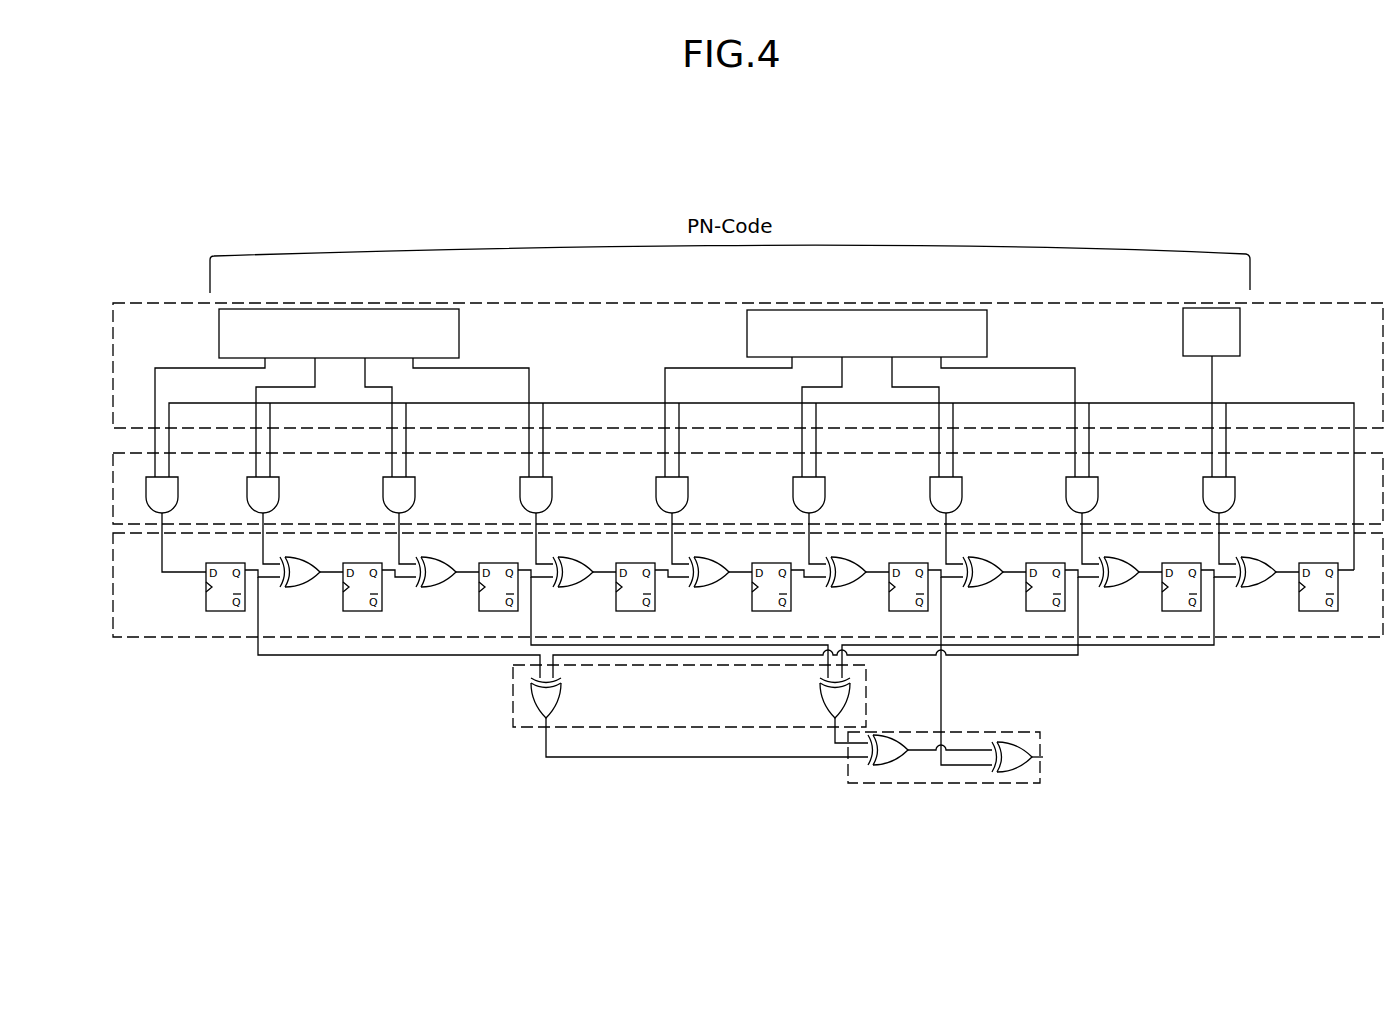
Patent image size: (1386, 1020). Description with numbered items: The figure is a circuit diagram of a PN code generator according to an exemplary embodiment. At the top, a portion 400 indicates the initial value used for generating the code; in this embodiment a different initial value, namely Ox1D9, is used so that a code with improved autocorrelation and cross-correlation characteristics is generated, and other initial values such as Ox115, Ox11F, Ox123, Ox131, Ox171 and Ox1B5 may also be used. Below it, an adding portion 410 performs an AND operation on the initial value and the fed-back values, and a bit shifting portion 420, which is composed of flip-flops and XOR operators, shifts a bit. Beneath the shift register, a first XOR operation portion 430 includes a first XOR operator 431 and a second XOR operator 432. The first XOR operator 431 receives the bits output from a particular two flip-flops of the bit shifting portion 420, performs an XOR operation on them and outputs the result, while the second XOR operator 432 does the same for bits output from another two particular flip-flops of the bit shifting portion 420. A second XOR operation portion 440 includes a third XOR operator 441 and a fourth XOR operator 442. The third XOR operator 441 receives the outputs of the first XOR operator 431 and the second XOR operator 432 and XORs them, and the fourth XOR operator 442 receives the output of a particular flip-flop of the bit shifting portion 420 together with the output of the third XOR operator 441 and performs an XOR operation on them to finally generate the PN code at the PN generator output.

The portion indicating an initial value 400 is at (113, 357).
The adding portion 410 is at (113, 480).
The bit shifting portion 420 is at (113, 566).
The first XOR operation portion 430 is at (513, 698).
The first XOR operator 431 is at (538, 712).
The second XOR operator 432 is at (827, 712).
The second XOR operation portion 440 is at (1040, 734).
The third XOR operator 441 is at (895, 757).
The fourth XOR operator 442 is at (1018, 757).